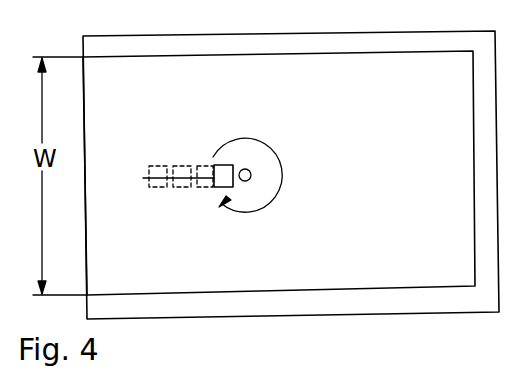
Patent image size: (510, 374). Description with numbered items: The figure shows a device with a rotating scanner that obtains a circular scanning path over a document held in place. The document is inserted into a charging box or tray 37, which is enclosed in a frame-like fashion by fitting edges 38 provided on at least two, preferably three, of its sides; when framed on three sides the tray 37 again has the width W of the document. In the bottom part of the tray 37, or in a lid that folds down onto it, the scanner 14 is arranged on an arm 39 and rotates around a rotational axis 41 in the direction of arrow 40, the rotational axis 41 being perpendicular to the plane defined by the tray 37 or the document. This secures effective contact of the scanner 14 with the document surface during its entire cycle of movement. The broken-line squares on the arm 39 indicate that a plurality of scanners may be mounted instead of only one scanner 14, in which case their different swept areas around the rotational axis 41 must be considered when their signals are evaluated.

The scanner 14 is at (222, 187).
The charging box or tray 37 is at (406, 273).
The fitting edges 38 is at (403, 40).
The arm 39 is at (143, 178).
The arrow 40 is at (272, 207).
The rotational axis 41 is at (250, 170).